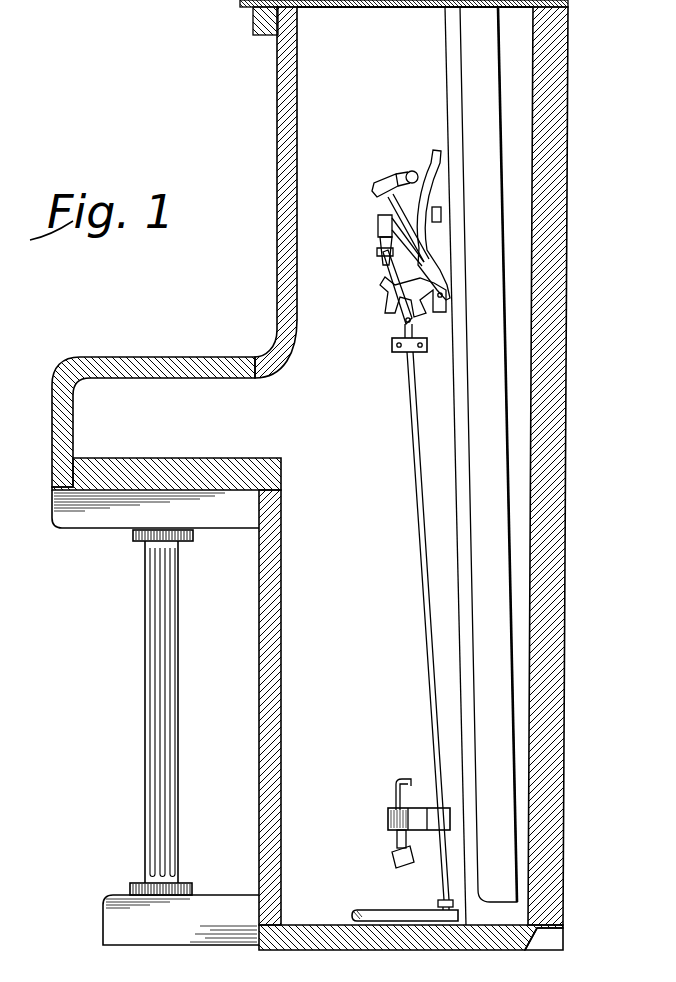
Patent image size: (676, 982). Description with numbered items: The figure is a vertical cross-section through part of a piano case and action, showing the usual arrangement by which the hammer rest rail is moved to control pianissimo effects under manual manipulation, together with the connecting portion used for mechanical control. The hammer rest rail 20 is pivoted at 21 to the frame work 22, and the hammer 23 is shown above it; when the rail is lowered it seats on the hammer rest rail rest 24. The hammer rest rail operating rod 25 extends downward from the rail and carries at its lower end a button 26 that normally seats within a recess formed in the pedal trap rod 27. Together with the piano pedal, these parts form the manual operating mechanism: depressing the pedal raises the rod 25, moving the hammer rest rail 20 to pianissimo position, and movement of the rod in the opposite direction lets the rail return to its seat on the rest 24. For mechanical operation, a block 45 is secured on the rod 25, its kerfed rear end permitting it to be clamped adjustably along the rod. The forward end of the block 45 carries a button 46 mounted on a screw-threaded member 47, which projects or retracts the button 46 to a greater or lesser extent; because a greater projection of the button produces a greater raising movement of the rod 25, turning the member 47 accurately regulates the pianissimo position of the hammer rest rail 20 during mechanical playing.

The hammer rest rail 20 is at (382, 240).
The pivot 21 is at (427, 263).
The frame work 22 is at (411, 217).
The hammer 23 is at (390, 213).
The hammer rest rail rest 24 is at (382, 253).
The hammer rest rail operating rod 25 is at (408, 378).
The button 26 is at (438, 902).
The pedal trap rod 27 is at (393, 902).
The block 45 is at (388, 818).
The button 46 is at (395, 843).
The screw-threaded member 47 is at (395, 793).